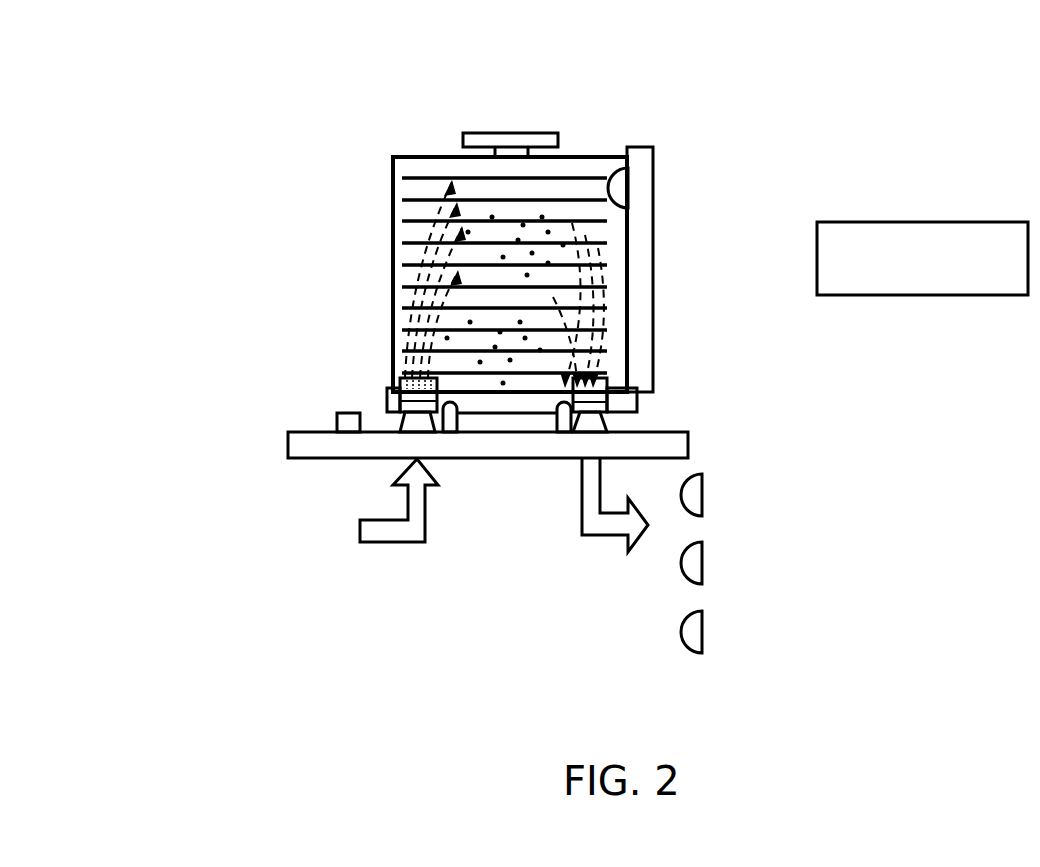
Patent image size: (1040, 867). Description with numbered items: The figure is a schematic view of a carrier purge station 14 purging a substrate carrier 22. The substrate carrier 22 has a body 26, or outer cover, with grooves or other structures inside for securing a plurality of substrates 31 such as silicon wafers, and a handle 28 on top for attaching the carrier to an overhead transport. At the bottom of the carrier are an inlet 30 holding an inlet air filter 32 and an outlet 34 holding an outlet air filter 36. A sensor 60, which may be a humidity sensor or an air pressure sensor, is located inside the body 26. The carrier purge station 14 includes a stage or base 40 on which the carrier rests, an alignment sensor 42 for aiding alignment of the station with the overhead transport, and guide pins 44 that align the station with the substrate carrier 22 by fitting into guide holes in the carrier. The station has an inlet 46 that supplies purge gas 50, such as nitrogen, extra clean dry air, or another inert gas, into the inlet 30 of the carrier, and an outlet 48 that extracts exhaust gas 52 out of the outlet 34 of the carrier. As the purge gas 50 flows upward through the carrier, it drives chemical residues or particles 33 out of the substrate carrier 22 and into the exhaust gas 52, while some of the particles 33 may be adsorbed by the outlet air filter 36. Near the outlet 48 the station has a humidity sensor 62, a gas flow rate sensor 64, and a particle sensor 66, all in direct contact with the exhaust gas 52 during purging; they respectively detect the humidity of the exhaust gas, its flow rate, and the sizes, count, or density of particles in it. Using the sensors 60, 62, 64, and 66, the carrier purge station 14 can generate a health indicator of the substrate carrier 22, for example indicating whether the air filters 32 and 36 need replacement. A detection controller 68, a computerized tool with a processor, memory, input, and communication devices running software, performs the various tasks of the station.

The carrier purge station 14 is at (232, 440).
The substrate carrier 22 is at (308, 88).
The body 26 is at (420, 157).
The handle 28 is at (510, 133).
The inlet 30 is at (400, 396).
The substrates 31 is at (410, 180).
The inlet air filter 32 is at (403, 380).
The chemical residues or particles 33 is at (468, 362).
The outlet 34 is at (610, 396).
The outlet air filter 36 is at (603, 368).
The base 40 is at (307, 450).
The alignment sensor 42 is at (350, 413).
The guide pins 44 is at (552, 422).
The inlet 46 is at (405, 425).
The outlet 48 is at (605, 428).
The purge gas 50 is at (392, 536).
The exhaust gas 52 is at (605, 536).
The sensor 60 is at (632, 188).
The humidity sensor 62 is at (705, 495).
The gas flow rate sensor 64 is at (705, 563).
The particle sensor 66 is at (705, 632).
The detection controller 68 is at (923, 222).